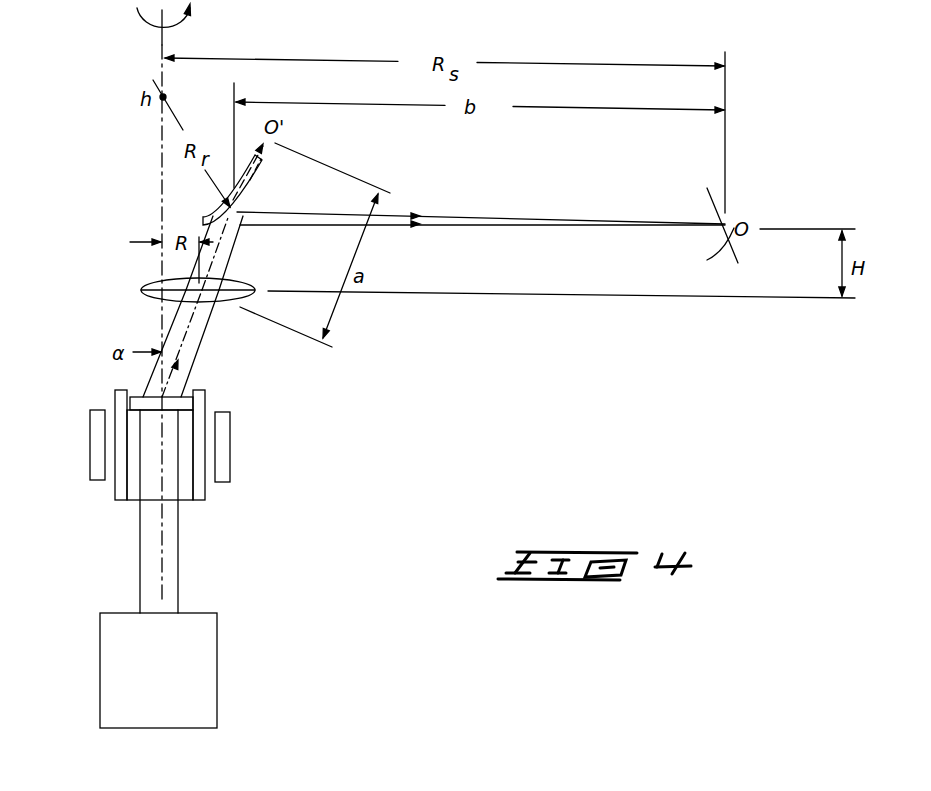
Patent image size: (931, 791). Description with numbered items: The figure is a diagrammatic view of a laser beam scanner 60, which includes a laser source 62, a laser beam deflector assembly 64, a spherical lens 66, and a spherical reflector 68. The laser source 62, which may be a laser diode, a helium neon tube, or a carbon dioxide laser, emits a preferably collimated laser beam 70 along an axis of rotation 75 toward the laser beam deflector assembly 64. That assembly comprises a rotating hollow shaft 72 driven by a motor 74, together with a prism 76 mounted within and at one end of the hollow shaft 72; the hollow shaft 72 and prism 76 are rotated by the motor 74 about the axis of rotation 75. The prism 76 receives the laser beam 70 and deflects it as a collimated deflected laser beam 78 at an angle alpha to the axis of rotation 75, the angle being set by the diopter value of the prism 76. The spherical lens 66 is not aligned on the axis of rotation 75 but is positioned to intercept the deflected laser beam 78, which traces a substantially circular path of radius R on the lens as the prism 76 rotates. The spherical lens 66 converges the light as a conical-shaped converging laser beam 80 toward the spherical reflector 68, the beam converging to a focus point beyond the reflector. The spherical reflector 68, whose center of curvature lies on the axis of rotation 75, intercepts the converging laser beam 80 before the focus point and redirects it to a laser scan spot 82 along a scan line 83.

The laser beam scanner 60 is at (387, 345).
The laser source 62 is at (213, 650).
The laser beam deflector assembly 64 is at (230, 500).
The spherical lens 66 is at (231, 306).
The spherical reflector 68 is at (255, 193).
The laser beam 70 is at (178, 562).
The hollow shaft 72 is at (123, 495).
The motor 74 is at (97, 452).
The axis of rotation 75 is at (160, 530).
The prism 76 is at (187, 397).
The deflected laser beam 78 is at (168, 323).
The converging laser beam 80 is at (233, 249).
The laser scan spot 82 is at (561, 285).
The scan line 83 is at (740, 260).